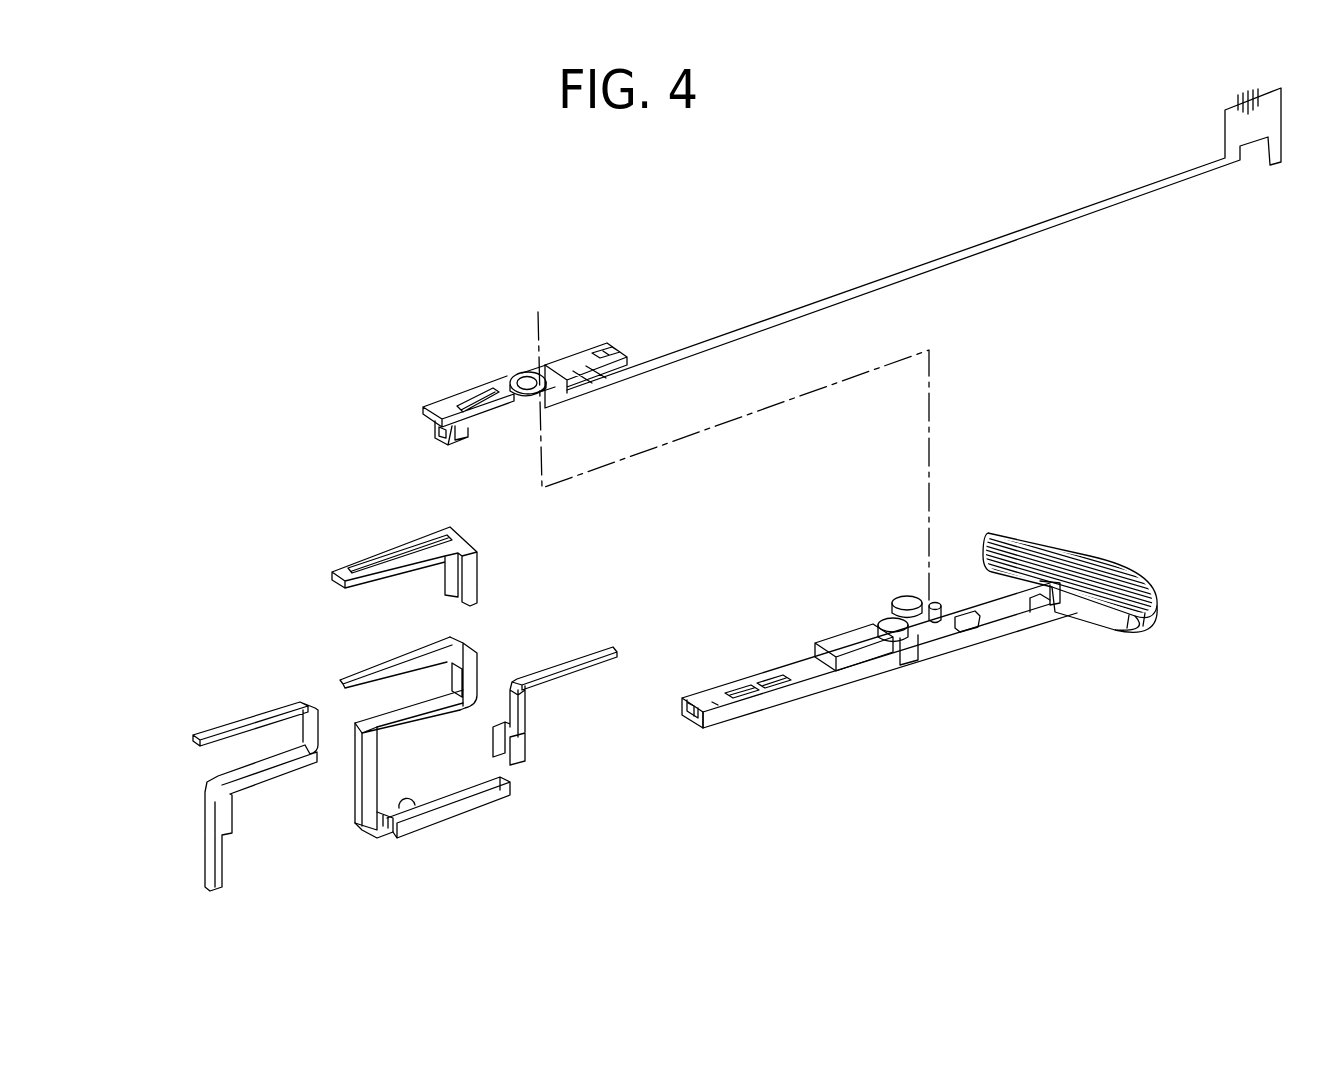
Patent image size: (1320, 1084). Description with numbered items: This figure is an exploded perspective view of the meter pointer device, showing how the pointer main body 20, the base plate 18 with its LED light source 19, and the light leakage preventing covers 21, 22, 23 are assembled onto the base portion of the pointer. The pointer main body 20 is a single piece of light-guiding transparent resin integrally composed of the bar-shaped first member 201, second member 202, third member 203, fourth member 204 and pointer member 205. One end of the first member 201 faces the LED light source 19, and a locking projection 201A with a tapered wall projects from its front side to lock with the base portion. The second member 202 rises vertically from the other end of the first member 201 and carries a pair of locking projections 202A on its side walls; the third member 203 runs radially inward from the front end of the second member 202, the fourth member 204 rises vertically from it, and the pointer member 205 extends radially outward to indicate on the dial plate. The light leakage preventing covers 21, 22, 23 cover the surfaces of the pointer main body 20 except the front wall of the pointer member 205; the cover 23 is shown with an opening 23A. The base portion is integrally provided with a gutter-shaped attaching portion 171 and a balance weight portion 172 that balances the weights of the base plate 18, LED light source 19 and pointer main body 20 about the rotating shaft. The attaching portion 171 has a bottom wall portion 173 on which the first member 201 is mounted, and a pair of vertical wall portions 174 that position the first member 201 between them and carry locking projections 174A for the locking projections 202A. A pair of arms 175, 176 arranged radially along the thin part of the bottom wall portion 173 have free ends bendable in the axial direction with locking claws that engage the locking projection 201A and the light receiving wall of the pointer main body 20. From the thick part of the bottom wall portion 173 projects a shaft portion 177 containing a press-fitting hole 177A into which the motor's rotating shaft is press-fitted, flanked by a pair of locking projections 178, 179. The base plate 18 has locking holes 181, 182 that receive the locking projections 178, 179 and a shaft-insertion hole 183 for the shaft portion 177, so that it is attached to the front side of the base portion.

The base plate 18 is at (586, 340).
The locking hole 181 is at (468, 401).
The locking hole 182 is at (612, 352).
The shaft-insertion hole 183 is at (522, 378).
The LED light source 19 is at (443, 445).
The light leakage preventing cover 23 is at (460, 525).
The slot 23A is at (412, 548).
The pointer main body 20 is at (431, 736).
The first member 201 is at (510, 790).
The locking projection 201A is at (412, 812).
The second member 202 is at (360, 789).
The locking projections 202A is at (365, 825).
The third member 203 is at (400, 718).
The fourth member 204 is at (483, 668).
The pointer member 205 is at (410, 647).
The light leakage preventing cover 21 is at (205, 820).
The light leakage preventing cover 22 is at (595, 656).
The attaching portion 171 is at (861, 656).
The balance weight portion 172 is at (1103, 552).
The bottom wall portion 173 is at (688, 726).
The vertical wall portions 174 is at (682, 709).
The locking projections 174A is at (705, 693).
The arm 175 is at (735, 690).
The arm 176 is at (808, 664).
The shaft portion 177 is at (948, 640).
The press-fitting hole 177A is at (933, 602).
The locking projection 178 is at (901, 645).
The locking projection 179 is at (1038, 623).